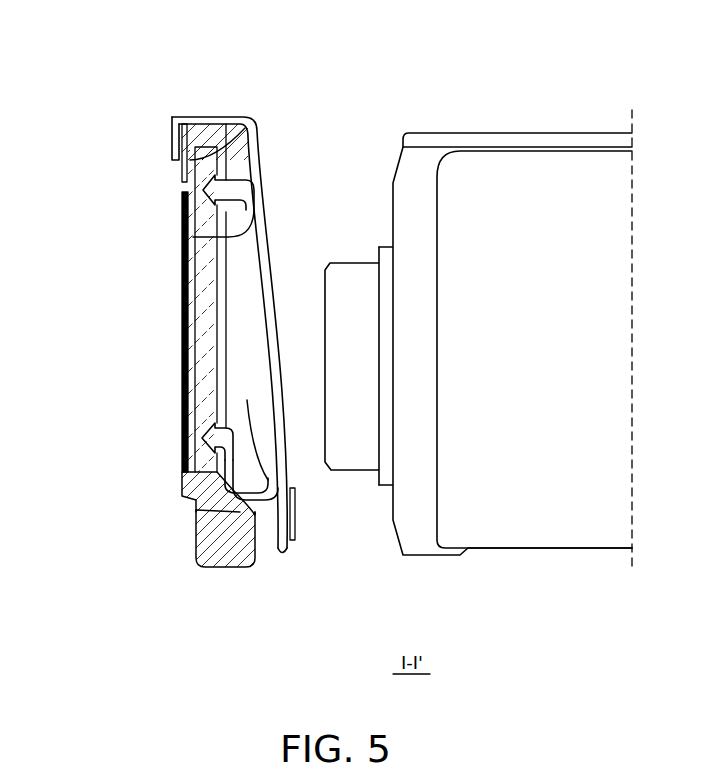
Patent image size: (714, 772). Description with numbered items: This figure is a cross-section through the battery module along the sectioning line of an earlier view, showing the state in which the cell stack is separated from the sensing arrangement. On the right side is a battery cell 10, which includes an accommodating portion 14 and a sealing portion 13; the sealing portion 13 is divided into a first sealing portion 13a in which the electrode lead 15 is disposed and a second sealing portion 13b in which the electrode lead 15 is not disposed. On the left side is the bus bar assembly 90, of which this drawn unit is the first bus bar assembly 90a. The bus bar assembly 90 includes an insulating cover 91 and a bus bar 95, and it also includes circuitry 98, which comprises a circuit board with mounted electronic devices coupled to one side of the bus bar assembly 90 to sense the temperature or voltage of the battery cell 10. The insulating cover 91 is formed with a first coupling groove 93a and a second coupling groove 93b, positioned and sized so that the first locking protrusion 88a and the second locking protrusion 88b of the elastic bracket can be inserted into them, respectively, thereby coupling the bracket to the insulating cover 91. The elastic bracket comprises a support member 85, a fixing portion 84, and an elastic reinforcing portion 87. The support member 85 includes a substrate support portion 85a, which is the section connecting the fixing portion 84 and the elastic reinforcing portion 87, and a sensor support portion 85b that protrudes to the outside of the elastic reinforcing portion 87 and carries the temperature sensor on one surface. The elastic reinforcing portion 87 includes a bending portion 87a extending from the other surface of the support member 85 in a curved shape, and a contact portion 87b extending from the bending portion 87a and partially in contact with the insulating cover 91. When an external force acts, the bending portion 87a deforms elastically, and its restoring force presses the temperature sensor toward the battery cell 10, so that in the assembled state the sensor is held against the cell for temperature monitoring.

The battery cell 10 is at (527, 562).
The sealing portion 13 is at (435, 65).
The first sealing portion 13a is at (415, 168).
The second sealing portion 13b is at (517, 152).
The accommodating portion 14 is at (587, 185).
The electrode lead 15 is at (352, 462).
The fixing portion 84 is at (197, 237).
The support member 85 is at (92, 318).
The substrate support portion 85a is at (260, 312).
The sensor support portion 85b is at (247, 400).
The elastic reinforcing portion 87 is at (92, 472).
The bending portion 87a is at (198, 513).
The contact portion 87b is at (192, 477).
The first locking protrusion 88a is at (201, 206).
The second locking protrusion 88b is at (202, 431).
The bus bar assembly 90 is at (196, 100).
The first bus bar assembly 90a is at (199, 319).
The insulating cover 91 is at (178, 118).
The first coupling groove 93a is at (262, 185).
The second coupling groove 93b is at (205, 450).
The bus bar 95 is at (182, 195).
The circuitry 98 is at (231, 124).